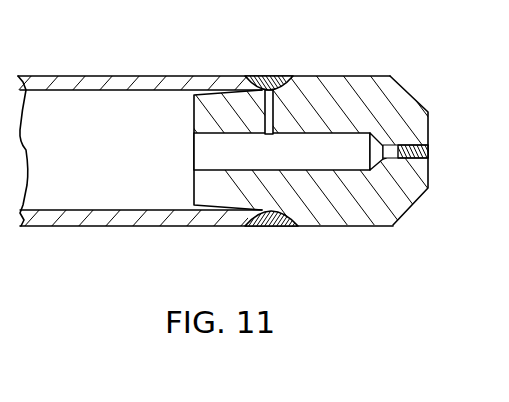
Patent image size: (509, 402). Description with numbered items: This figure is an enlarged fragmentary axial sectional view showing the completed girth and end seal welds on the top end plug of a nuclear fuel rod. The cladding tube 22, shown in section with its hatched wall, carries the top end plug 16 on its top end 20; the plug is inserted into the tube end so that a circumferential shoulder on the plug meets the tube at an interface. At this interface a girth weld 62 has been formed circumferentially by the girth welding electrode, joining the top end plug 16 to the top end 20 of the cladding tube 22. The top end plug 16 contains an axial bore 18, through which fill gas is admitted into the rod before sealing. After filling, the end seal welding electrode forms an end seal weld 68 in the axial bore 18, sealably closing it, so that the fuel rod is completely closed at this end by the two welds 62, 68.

The top end plug 16 is at (345, 210).
The axial bore 18 is at (373, 132).
The top end 20 is at (232, 228).
The cladding tube 22 is at (71, 228).
The girth weld 62 is at (277, 75).
The end seal weld 68 is at (428, 148).